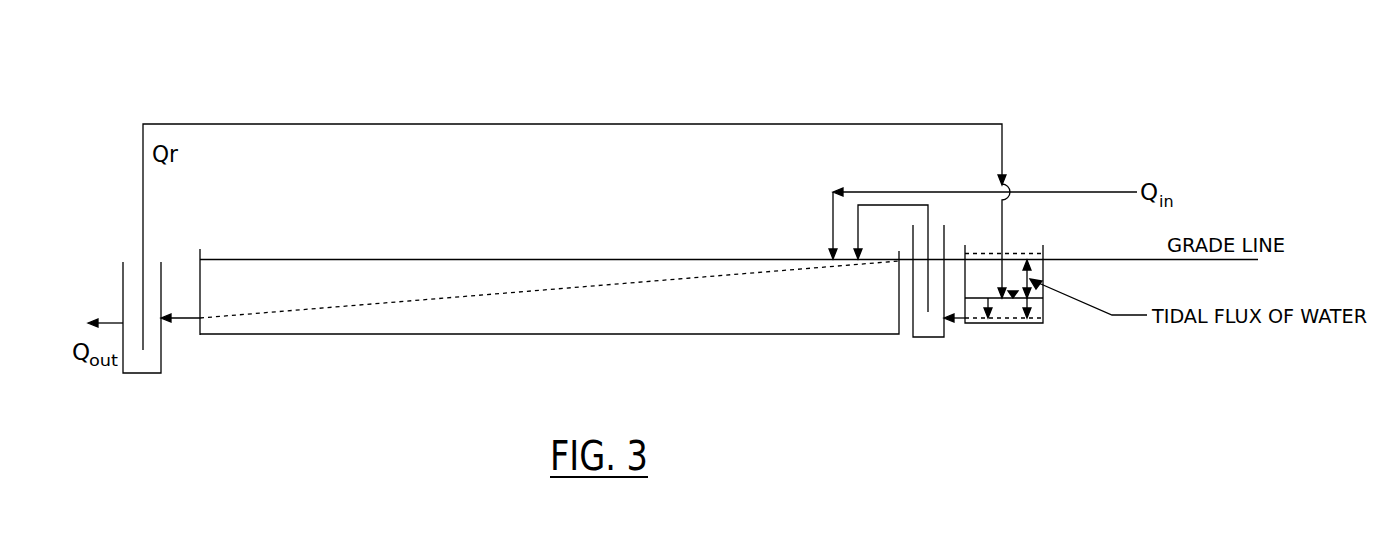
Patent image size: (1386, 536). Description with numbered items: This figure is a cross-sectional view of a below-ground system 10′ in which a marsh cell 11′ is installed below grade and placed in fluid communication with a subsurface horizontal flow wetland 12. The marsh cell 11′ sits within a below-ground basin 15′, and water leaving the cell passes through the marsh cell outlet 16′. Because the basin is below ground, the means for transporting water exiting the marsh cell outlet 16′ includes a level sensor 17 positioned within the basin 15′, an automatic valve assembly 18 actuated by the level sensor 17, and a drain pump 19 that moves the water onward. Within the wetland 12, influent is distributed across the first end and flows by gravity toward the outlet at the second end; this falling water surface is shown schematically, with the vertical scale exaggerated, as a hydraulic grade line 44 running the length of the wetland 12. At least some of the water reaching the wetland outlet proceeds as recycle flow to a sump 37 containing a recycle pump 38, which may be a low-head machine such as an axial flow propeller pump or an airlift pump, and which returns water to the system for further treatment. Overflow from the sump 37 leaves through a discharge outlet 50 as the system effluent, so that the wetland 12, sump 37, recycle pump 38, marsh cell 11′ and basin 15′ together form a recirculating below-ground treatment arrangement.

The below-ground system 10′ is at (1028, 131).
The marsh cell 11′ is at (1045, 248).
The subsurface horizontal flow wetland 12 is at (747, 335).
The below-ground basin 15′ is at (1044, 305).
The marsh cell outlet 16′ is at (1003, 300).
The level sensor 17 is at (980, 252).
The automatic valve assembly 18 is at (977, 322).
The drain pump 19 is at (920, 337).
The sump 37 is at (135, 374).
The recycle pump 38 is at (151, 355).
The hydraulic grade line 44 is at (673, 278).
The discharge outlet 50 is at (107, 321).